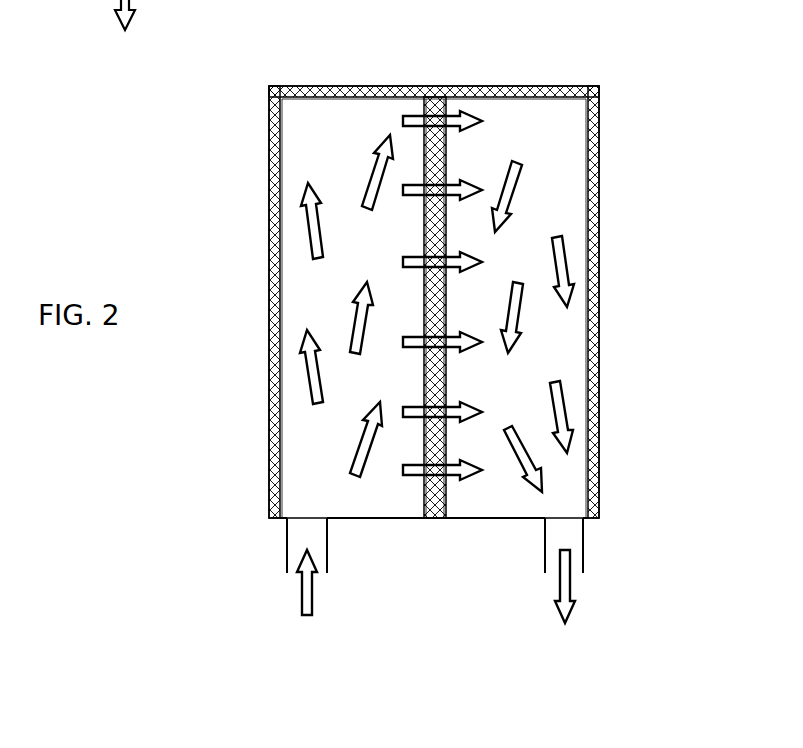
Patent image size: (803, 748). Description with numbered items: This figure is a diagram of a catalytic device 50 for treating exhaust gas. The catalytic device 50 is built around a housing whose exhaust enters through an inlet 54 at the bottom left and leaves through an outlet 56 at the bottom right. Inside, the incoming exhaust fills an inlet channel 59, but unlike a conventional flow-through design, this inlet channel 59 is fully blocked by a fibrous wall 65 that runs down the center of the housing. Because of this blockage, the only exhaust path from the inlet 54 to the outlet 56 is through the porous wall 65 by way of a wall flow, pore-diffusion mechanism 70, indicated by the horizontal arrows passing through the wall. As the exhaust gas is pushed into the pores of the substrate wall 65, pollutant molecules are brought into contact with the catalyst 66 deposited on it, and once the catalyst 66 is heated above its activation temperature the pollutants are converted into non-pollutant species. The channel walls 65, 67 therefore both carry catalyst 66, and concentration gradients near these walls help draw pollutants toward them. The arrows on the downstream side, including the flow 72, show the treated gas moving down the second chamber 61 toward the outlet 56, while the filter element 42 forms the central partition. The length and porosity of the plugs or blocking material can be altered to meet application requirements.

The catalytic device 50 is at (588, 54).
The filter element 42 is at (434, 88).
The catalyst 66 is at (403, 96).
The wall flow, pore-diffusion mechanism 70 is at (431, 160).
The inlet channel 59 is at (313, 134).
The second chamber side wall 61 is at (567, 141).
The air flow 72 is at (555, 174).
The channel wall 67 is at (267, 445).
The inlet 54 is at (286, 530).
The outlet 56 is at (543, 540).
The fibrous wall 65 is at (434, 503).